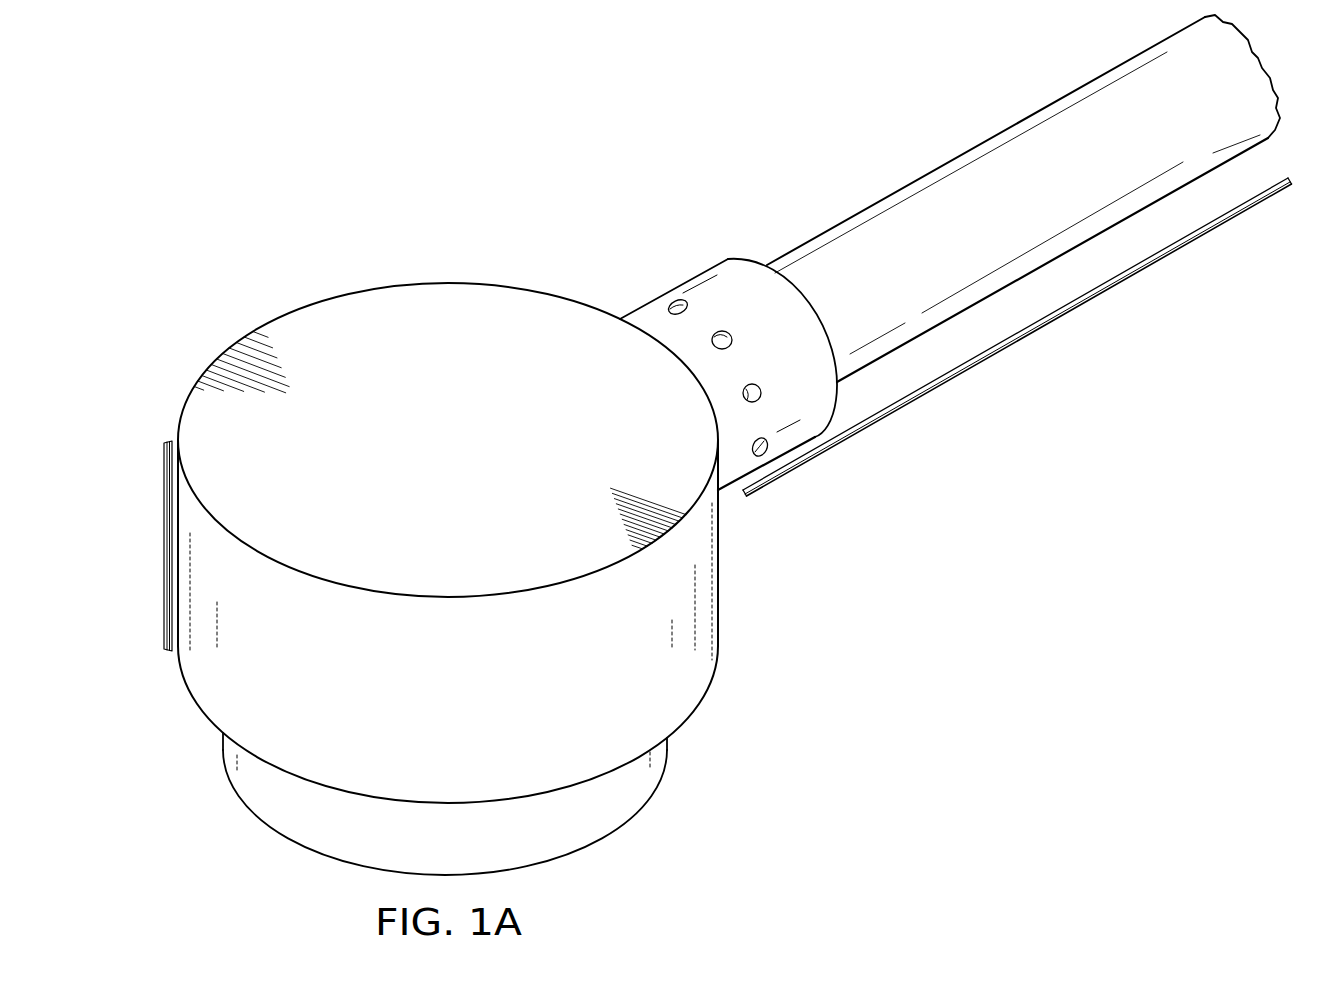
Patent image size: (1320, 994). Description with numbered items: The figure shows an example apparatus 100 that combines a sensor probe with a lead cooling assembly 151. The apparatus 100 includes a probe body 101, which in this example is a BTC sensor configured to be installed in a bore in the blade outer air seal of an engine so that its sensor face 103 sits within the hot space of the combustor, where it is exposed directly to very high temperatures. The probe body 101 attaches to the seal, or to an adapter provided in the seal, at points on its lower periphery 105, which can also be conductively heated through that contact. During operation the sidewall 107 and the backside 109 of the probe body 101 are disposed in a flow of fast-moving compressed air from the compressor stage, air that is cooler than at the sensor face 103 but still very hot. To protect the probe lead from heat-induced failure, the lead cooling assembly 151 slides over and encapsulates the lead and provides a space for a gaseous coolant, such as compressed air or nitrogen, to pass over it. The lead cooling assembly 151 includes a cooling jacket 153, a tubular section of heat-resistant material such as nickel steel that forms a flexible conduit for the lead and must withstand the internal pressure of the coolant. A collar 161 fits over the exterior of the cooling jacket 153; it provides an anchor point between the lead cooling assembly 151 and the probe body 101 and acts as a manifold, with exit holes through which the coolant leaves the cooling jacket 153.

The apparatus 100 is at (272, 120).
The probe body 101 is at (350, 260).
The sensor face 103 is at (285, 843).
The lower periphery 105 is at (690, 727).
The sidewall 107 is at (163, 447).
The backside 109 is at (302, 350).
The lead cooling assembly 151 is at (1021, 337).
The cooling jacket 153 is at (964, 156).
The collar 161 is at (674, 291).